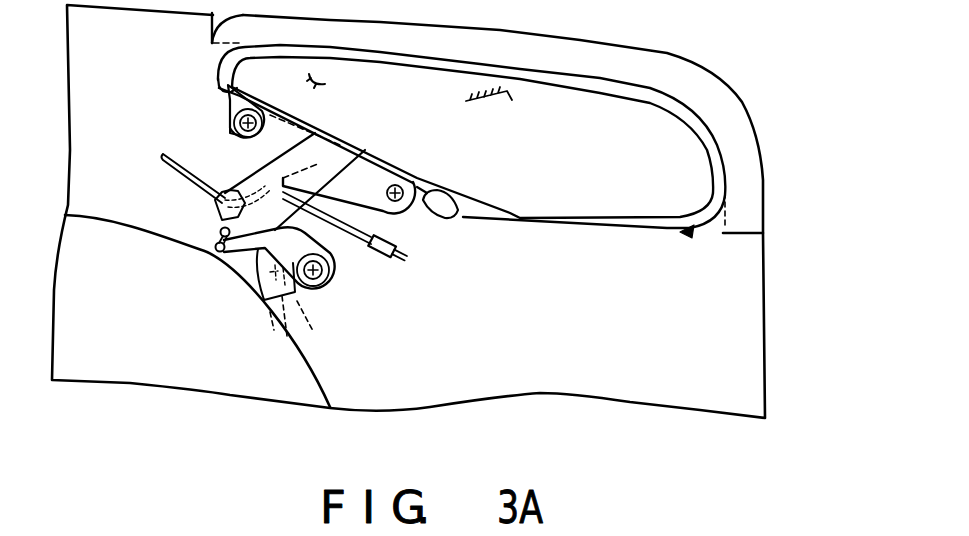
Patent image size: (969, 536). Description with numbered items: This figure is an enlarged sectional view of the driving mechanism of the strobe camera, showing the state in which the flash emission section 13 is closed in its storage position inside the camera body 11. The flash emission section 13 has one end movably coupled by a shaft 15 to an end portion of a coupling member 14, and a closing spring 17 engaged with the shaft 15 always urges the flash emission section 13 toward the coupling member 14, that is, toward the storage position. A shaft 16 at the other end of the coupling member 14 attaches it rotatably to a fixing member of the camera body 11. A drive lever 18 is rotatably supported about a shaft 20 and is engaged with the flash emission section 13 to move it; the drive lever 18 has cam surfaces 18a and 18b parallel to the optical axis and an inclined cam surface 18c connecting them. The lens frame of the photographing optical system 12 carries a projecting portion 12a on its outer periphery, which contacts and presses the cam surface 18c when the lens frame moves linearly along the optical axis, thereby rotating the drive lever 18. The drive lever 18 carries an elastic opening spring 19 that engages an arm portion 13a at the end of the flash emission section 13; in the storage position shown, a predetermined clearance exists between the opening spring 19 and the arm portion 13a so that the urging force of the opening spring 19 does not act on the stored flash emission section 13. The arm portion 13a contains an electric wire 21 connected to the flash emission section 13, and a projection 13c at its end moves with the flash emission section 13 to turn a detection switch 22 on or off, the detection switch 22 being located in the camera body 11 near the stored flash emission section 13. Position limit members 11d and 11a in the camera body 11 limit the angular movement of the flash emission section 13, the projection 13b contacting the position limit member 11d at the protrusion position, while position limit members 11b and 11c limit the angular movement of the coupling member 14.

The camera body 11 is at (762, 345).
The position limit member 11a is at (684, 233).
The position limit member 11b is at (257, 157).
The position limit member 11c is at (338, 93).
The position limit member 11d is at (513, 100).
The photographing optical system 12 is at (90, 226).
The projecting portion 12a is at (247, 276).
The flash emission section 13 is at (580, 50).
The arm portion 13a is at (214, 203).
The projection 13b is at (448, 215).
The projection 13c is at (220, 232).
The coupling member 14 is at (367, 200).
The shaft 15 is at (230, 133).
The shaft 16 is at (437, 181).
The closing spring 17 is at (228, 88).
The drive lever 18 is at (338, 246).
The cam surface 18a is at (308, 326).
The cam surface 18b is at (277, 313).
The cam surface 18c is at (275, 350).
The opening spring 19 is at (216, 256).
The shaft 20 is at (330, 292).
The electric wire 21 is at (160, 155).
The detection switch 22 is at (383, 263).